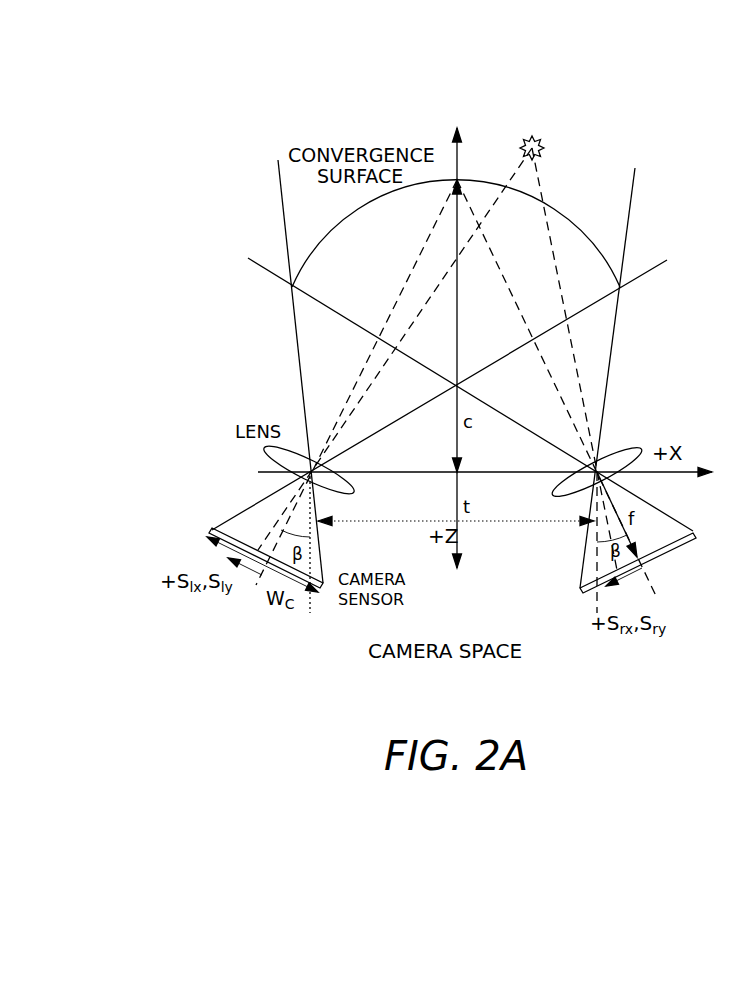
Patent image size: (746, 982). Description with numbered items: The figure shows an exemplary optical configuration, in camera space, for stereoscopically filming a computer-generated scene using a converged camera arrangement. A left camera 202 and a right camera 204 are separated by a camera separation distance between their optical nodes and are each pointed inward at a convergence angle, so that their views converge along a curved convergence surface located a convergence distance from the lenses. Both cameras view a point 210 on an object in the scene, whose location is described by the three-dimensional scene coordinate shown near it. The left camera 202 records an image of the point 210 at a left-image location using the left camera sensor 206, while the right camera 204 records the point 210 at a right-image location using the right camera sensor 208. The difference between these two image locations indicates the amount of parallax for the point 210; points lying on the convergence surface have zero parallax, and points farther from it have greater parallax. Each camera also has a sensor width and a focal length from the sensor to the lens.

The left camera 202 is at (257, 542).
The right camera 204 is at (647, 539).
The left camera sensor 206 is at (212, 527).
The right camera sensor 208 is at (694, 534).
The point 210 is at (530, 137).